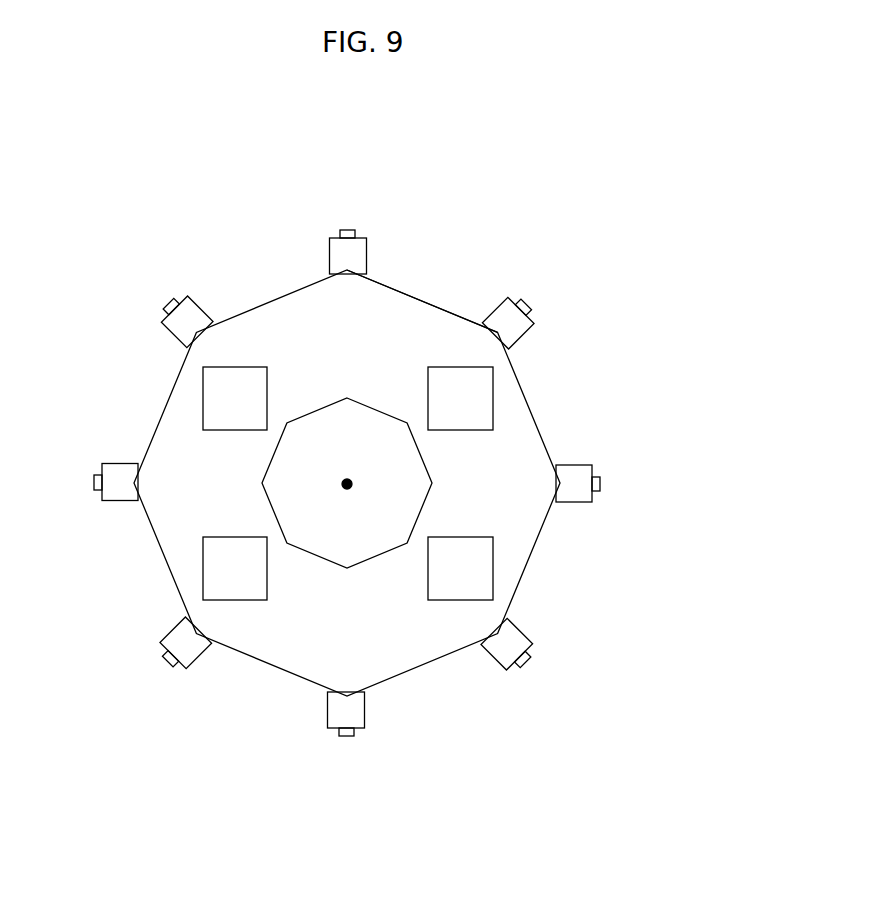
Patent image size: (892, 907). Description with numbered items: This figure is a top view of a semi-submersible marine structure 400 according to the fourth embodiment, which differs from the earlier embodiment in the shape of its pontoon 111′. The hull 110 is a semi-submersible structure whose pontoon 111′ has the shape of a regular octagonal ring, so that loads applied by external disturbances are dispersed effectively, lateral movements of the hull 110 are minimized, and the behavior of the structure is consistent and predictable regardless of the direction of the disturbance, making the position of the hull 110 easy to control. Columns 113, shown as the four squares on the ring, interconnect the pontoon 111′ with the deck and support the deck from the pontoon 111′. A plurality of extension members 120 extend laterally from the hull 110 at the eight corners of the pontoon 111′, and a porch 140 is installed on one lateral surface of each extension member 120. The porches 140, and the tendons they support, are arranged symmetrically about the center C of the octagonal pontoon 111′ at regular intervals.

The semi-submersible marine structure 400 is at (69, 171).
The hull 110 is at (663, 247).
The pontoon 111′ is at (420, 293).
The column 113 is at (493, 412).
The extension member 120 is at (570, 503).
The porch 140 is at (600, 482).
The center C is at (340, 490).